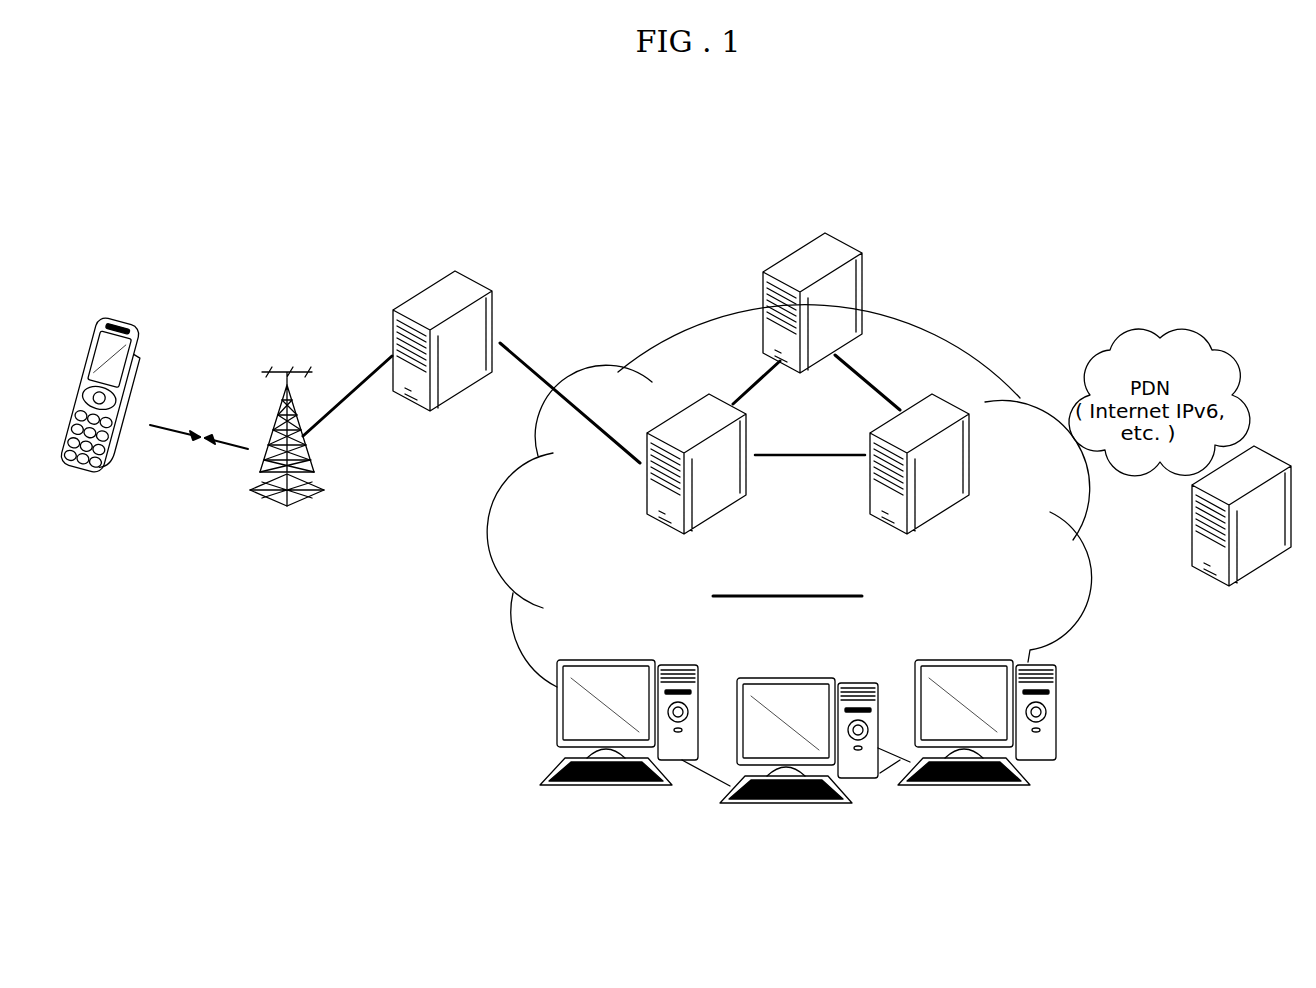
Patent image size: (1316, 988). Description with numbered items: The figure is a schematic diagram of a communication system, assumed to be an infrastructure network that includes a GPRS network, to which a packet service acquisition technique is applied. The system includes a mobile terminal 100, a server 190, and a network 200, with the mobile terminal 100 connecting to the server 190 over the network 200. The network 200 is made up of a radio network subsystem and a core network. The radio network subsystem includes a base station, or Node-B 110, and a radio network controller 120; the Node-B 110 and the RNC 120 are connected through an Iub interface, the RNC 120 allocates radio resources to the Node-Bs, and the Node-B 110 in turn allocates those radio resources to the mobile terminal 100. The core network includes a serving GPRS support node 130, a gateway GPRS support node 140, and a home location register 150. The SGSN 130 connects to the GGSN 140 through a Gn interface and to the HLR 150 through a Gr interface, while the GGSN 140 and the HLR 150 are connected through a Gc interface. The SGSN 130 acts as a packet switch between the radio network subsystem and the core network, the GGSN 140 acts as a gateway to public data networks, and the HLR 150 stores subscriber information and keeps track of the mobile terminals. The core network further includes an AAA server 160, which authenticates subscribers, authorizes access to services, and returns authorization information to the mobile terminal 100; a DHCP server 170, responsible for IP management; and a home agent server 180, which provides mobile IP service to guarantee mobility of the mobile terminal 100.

The mobile terminal 100 is at (119, 320).
The base station (Node-B) 110 is at (310, 470).
The radio network controller (RNC) 120 is at (432, 298).
The serving GPRS support node (SGSN) 130 is at (697, 407).
The gateway GPRS support node (GGSN) 140 is at (923, 407).
The home location register (HLR) 150 is at (802, 255).
The AAA server 160 is at (603, 662).
The DHCP server 170 is at (785, 680).
The HA server 180 is at (962, 662).
The server 190 is at (1268, 455).
The network 200 is at (656, 265).